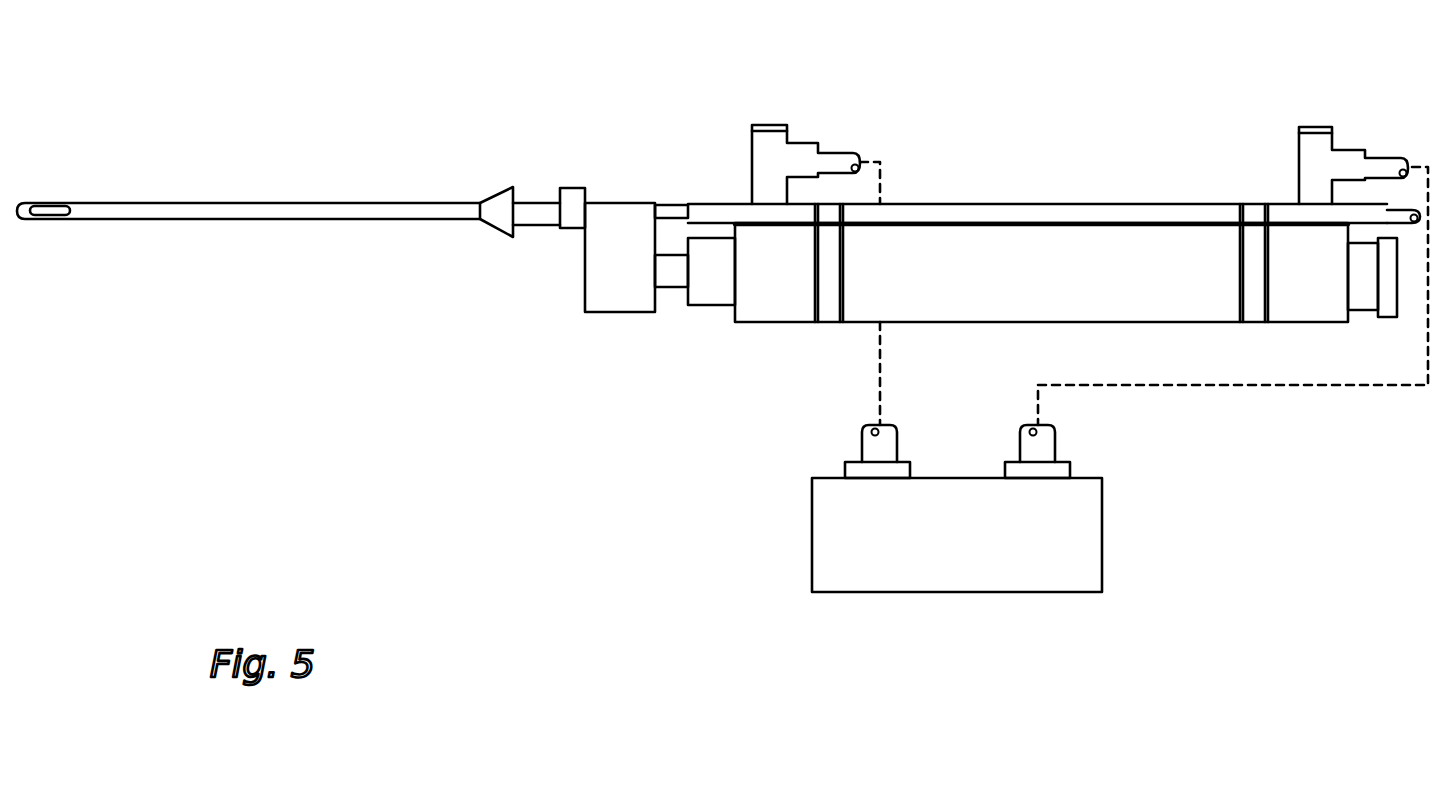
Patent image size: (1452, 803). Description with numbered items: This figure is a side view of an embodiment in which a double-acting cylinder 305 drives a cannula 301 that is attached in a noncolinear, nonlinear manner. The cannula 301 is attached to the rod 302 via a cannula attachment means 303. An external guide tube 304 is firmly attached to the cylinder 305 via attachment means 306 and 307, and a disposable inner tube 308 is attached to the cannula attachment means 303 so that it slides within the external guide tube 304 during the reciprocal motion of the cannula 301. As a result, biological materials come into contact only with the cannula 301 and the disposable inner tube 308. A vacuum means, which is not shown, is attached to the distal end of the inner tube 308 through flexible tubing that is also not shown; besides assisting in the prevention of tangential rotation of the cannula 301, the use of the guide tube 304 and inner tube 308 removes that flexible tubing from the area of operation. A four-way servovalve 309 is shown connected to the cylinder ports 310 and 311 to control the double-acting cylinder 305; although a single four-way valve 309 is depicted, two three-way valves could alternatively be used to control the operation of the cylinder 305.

The cannula 301 is at (196, 202).
The rod 302 is at (675, 290).
The cannula attachment means 303 is at (610, 203).
The external guide tube 304 is at (993, 204).
The cylinder 305 is at (768, 325).
The attachment means 306 is at (830, 200).
The attachment means 307 is at (1252, 204).
The disposable inner tube 308 is at (672, 203).
The four-way servovalve 309 is at (1102, 547).
The cylinder port 310 is at (805, 145).
The cylinder port 311 is at (1348, 145).